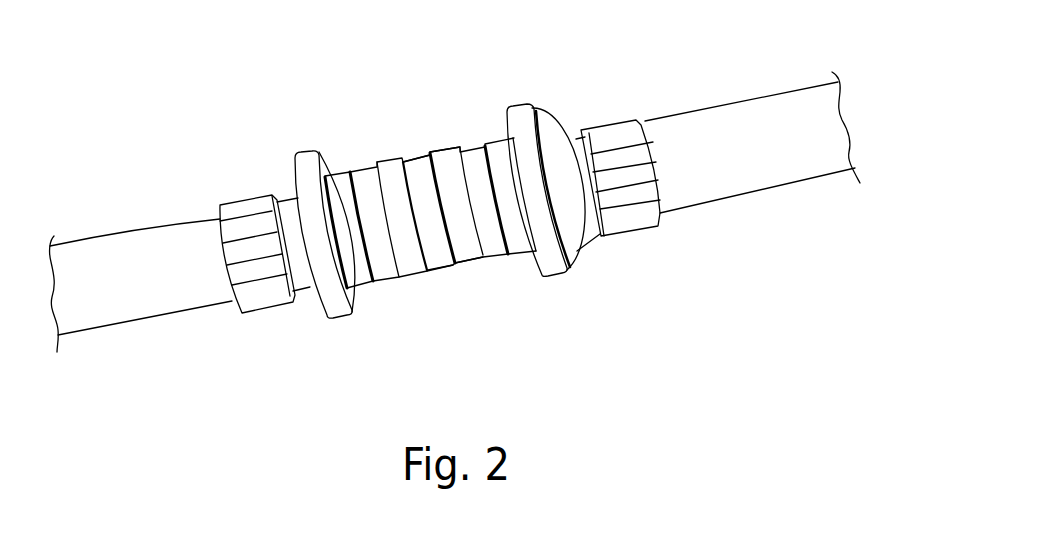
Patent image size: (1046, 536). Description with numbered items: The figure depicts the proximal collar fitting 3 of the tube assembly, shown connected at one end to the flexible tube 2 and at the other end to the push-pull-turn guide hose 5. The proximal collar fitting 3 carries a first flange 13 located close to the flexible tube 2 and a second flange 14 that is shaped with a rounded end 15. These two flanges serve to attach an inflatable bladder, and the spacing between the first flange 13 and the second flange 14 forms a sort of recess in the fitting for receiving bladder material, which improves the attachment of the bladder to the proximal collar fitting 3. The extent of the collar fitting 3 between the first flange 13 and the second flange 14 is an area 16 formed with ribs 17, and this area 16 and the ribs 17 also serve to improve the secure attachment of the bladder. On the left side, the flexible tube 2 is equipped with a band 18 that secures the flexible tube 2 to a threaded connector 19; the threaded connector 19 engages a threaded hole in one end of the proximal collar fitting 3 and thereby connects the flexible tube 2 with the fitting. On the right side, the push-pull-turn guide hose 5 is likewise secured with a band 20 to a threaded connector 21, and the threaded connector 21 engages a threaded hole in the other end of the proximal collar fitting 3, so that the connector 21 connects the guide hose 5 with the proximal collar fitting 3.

The flexible tube 2 is at (143, 229).
The proximal collar fitting 3 is at (430, 208).
The push-pull-turn guide hose 5 is at (732, 104).
The first flange 13 is at (303, 155).
The second flange 14 is at (517, 110).
The rounded end 15 is at (557, 124).
The area 16 is at (433, 270).
The ribs 17 is at (470, 264).
The band 18 is at (253, 313).
The threaded connector 19 is at (308, 292).
The band 20 is at (633, 233).
The threaded connector 21 is at (600, 233).